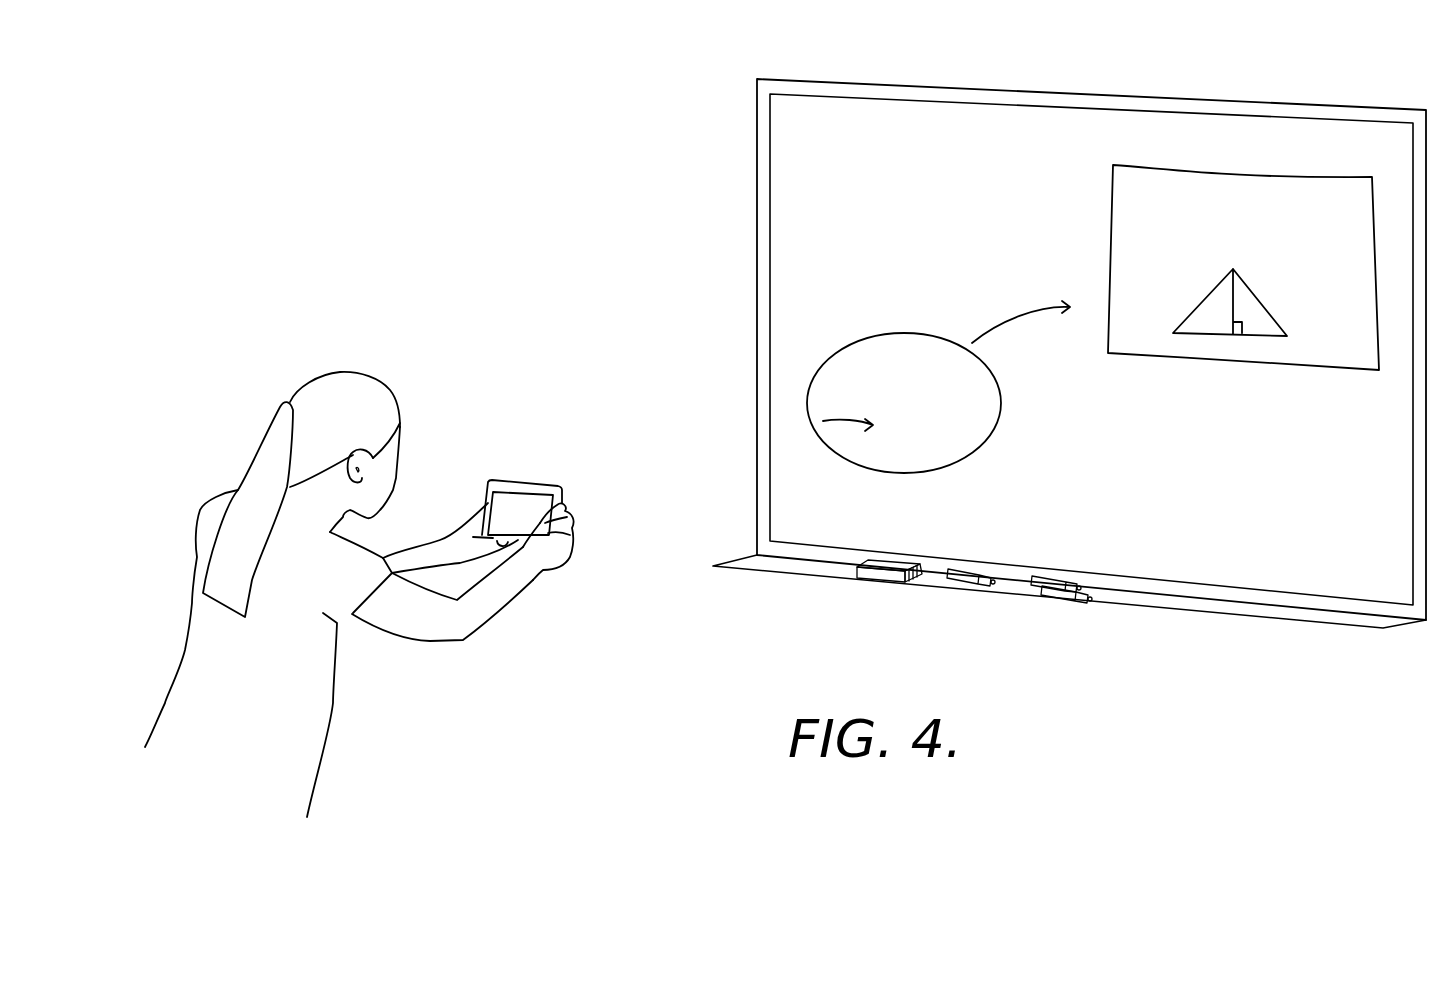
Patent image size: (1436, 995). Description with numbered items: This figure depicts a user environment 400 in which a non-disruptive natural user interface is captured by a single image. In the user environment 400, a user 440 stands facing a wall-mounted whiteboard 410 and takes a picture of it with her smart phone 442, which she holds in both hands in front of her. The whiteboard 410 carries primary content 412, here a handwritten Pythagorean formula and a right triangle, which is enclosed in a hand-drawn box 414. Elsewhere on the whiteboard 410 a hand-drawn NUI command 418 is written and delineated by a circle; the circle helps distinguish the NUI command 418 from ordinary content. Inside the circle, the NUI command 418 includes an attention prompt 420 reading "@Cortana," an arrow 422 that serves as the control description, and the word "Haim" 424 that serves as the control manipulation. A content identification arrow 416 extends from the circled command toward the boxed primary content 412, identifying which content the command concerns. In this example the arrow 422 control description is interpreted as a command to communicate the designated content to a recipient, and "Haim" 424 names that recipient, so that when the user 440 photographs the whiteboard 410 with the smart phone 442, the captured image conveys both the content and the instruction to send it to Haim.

The user environment 400 is at (452, 180).
The whiteboard 410 is at (1013, 93).
The primary content 412 is at (1290, 180).
The hand-drawn box 414 is at (1178, 167).
The content identification arrow 416 is at (1003, 322).
The NUI command 418 is at (913, 330).
The attention prompt 420 is at (822, 382).
The arrow 422 is at (830, 422).
The control manipulation "Haim" 424 is at (930, 443).
The user 440 is at (297, 383).
The smart phone 442 is at (522, 477).